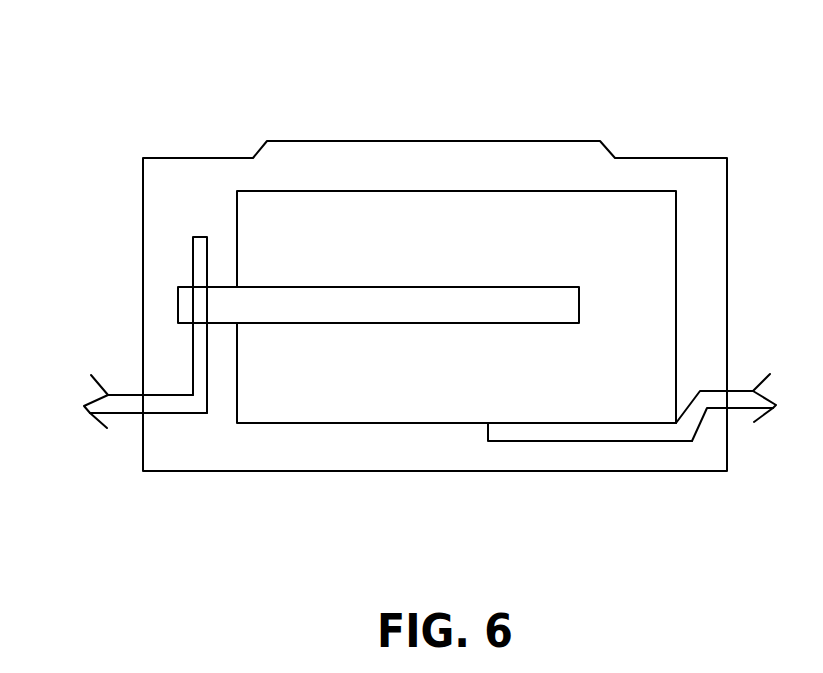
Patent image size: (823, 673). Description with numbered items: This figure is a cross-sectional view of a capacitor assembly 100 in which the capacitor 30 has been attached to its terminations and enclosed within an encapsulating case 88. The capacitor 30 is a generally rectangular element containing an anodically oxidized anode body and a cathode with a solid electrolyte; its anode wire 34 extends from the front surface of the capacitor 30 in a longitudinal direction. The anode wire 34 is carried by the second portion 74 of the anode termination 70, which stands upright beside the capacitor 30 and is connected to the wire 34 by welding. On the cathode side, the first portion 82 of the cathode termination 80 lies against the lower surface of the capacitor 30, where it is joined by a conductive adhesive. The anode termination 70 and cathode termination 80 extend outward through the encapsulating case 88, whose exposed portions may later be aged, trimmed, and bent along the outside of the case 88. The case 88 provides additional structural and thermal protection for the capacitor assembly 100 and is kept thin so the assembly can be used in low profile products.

The capacitor assembly 100 is at (340, 90).
The encapsulating case 88 is at (710, 180).
The capacitor 30 is at (612, 218).
The anode wire 34 is at (450, 308).
The second portion 74 is at (193, 345).
The anode termination 70 is at (100, 398).
The first portion 82 is at (622, 430).
The cathode termination 80 is at (742, 388).